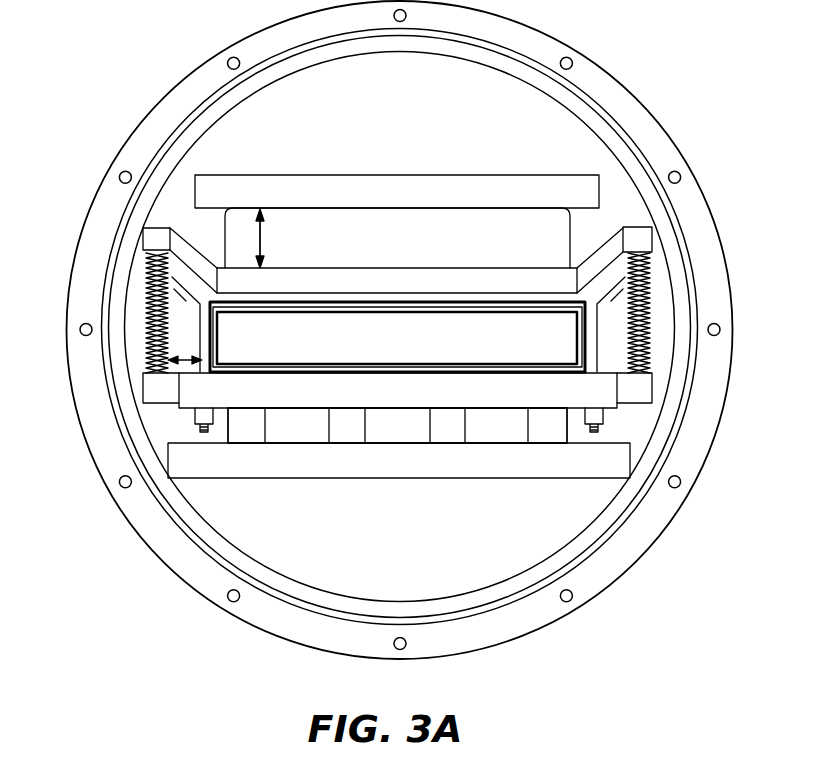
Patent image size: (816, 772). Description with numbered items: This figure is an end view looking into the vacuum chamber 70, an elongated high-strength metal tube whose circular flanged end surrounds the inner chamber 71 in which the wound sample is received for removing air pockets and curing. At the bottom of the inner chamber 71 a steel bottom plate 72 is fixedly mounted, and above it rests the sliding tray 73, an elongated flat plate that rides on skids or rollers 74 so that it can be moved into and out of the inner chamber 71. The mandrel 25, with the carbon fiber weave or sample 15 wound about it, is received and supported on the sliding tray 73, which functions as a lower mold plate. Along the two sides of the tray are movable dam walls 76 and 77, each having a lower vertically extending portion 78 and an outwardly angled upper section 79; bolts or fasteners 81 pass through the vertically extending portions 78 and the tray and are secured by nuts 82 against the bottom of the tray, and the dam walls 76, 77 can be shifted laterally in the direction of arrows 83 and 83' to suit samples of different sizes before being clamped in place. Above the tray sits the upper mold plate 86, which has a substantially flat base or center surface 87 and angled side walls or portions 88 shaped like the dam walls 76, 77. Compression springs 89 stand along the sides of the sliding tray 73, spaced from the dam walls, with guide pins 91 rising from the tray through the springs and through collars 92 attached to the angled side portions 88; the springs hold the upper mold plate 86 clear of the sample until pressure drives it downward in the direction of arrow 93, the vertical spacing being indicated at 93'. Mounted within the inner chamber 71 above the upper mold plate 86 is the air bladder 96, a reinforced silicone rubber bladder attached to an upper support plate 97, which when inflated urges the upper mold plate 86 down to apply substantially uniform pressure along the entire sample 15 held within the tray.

The vacuum chamber 70 is at (630, 86).
The inner chamber 71 is at (462, 139).
The bottom plate 72 is at (380, 457).
The sliding tray 73 is at (278, 388).
The skids or rollers 74 is at (450, 428).
The dam wall 76 is at (182, 300).
The dam wall 77 is at (650, 272).
The lower vertically extending portion 78 is at (167, 371).
The outwardly angled upper section 79 is at (180, 272).
The bolts or fasteners 81 is at (587, 423).
The nuts 82 is at (603, 410).
The arrow of lateral dam wall movement 83 is at (329, 422).
The arrow of lateral dam wall movement 83' is at (397, 337).
The upper mold plate 86 is at (570, 270).
The flat base or center surface 87 is at (380, 283).
The angled side walls or portions 88 is at (197, 253).
The compression springs 89 is at (200, 333).
The guide pins 91 is at (197, 351).
The collars 92 is at (155, 237).
The arrow of upper mold plate movement 93 is at (296, 238).
The vertical gap dimension 93' is at (283, 198).
The air bladder 96 is at (472, 252).
The upper support plate 97 is at (396, 197).
The mandrel 25 is at (537, 333).
The carbon fiber weave or sample 15 is at (590, 357).